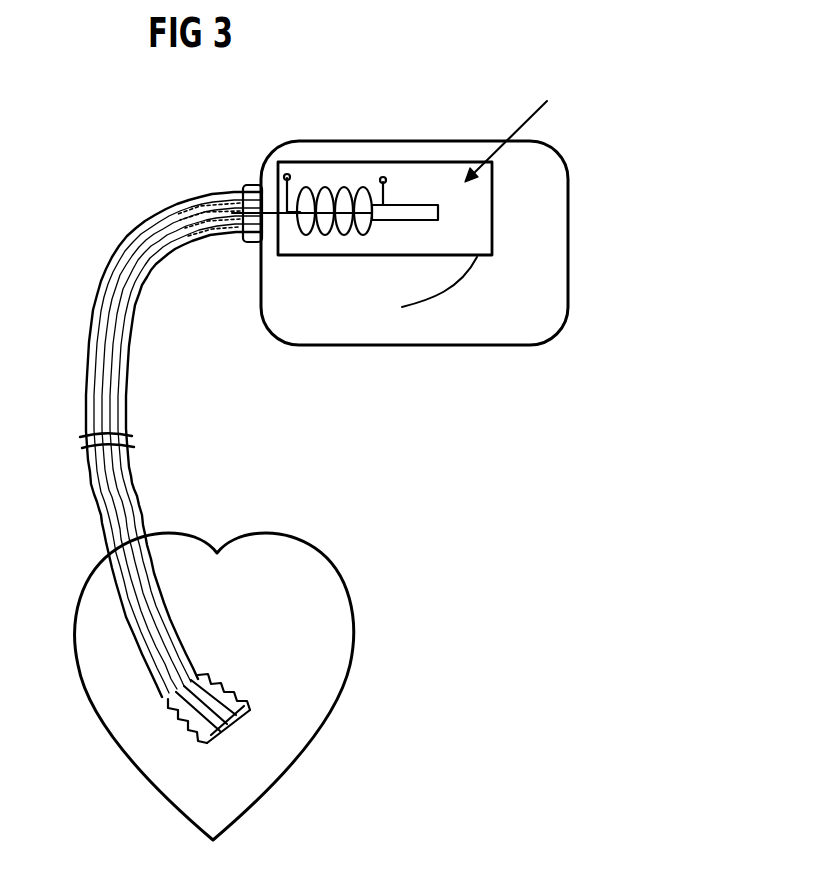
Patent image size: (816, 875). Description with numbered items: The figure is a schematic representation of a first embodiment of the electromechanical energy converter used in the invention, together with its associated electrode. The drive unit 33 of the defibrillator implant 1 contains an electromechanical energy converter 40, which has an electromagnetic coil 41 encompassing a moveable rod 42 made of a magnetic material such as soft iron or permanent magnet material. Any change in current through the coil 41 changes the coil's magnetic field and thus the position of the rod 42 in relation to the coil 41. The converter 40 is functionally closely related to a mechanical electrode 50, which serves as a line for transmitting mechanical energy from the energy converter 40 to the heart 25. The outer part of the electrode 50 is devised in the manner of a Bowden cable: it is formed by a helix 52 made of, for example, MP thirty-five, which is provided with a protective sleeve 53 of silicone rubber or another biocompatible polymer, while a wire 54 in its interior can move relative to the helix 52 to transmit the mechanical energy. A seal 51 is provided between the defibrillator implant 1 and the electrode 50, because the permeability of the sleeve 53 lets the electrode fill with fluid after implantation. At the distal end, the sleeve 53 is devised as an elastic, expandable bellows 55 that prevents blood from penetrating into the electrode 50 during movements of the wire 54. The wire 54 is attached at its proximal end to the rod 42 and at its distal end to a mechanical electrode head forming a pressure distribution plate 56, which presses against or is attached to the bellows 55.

The defibrillator implant 1 is at (481, 347).
The heart 25 is at (326, 565).
The drive unit 33 is at (492, 190).
The electromechanical energy converter 40 is at (429, 185).
The electromagnetic coil 41 is at (330, 188).
The moveable rod 42 is at (425, 219).
The mechanical electrode 50 is at (149, 421).
The seal 51 is at (250, 185).
The helix 52 is at (198, 202).
The protective sleeve 53 is at (100, 320).
The wire 54 is at (136, 504).
The bellows 55 is at (224, 683).
The pressure distribution plate 56 is at (228, 724).